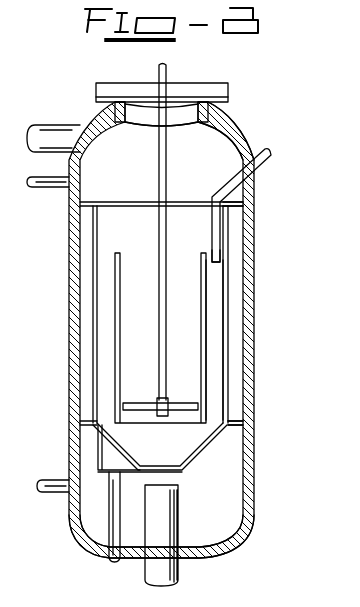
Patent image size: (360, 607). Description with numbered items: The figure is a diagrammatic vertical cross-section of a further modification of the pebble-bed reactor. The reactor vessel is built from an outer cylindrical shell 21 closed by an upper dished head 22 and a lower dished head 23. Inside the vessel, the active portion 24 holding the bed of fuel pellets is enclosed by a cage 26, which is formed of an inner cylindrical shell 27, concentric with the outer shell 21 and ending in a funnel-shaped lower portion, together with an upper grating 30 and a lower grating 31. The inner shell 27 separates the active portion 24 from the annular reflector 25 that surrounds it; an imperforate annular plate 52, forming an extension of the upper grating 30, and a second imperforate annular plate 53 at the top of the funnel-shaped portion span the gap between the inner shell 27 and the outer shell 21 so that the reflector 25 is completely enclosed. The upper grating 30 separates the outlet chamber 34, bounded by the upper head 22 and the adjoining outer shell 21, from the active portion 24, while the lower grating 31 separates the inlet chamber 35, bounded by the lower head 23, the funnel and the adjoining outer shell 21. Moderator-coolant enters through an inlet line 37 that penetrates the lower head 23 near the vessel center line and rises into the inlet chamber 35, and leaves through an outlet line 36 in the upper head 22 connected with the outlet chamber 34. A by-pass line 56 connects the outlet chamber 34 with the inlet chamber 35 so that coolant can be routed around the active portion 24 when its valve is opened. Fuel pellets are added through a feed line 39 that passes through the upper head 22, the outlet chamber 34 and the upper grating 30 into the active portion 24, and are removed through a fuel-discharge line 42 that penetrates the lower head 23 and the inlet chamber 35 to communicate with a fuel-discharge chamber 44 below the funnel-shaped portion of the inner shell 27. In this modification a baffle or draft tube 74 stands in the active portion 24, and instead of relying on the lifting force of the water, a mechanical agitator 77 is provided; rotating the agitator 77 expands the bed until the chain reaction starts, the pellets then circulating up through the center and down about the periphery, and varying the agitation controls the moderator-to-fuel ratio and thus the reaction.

The outer cylindrical shell 21 is at (72, 234).
The upper dished head 22 is at (238, 133).
The lower dished head 23 is at (256, 523).
The active portion 24 is at (110, 308).
The annular reflector 25 is at (88, 259).
The cage 26 is at (216, 311).
The inner cylindrical shell 27 is at (226, 261).
The upper grating 30 is at (178, 203).
The lower grating 31 is at (181, 470).
The outlet chamber 34 is at (206, 161).
The inlet chamber 35 is at (217, 515).
The outlet line 36 is at (57, 133).
The inlet line 37 is at (147, 572).
The feed line 39 is at (265, 161).
The fuel-discharge line 42 is at (110, 548).
The fuel-discharge chamber 44 is at (110, 453).
The imperforate annular plate 52 is at (238, 212).
The imperforate annular plate 53 is at (240, 423).
The by-pass line 56 is at (60, 186).
The baffle or draft tube 74 is at (190, 251).
The agitator 77 is at (185, 402).